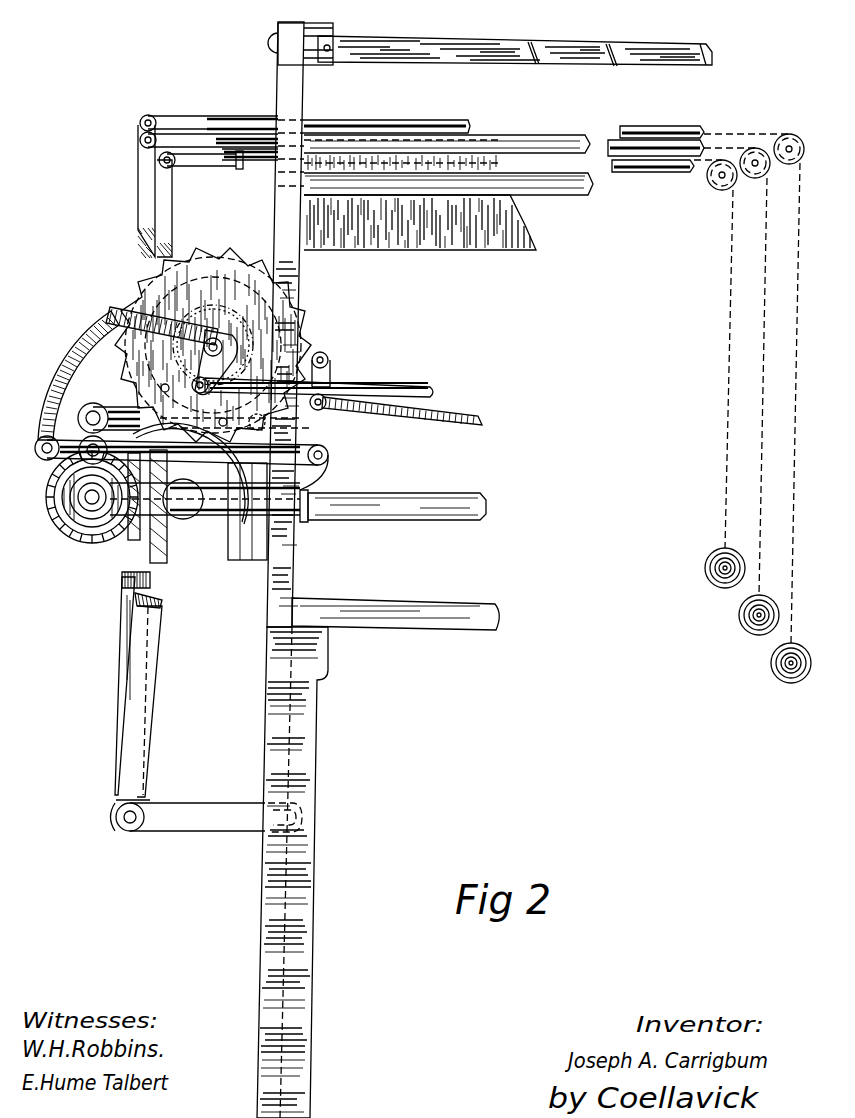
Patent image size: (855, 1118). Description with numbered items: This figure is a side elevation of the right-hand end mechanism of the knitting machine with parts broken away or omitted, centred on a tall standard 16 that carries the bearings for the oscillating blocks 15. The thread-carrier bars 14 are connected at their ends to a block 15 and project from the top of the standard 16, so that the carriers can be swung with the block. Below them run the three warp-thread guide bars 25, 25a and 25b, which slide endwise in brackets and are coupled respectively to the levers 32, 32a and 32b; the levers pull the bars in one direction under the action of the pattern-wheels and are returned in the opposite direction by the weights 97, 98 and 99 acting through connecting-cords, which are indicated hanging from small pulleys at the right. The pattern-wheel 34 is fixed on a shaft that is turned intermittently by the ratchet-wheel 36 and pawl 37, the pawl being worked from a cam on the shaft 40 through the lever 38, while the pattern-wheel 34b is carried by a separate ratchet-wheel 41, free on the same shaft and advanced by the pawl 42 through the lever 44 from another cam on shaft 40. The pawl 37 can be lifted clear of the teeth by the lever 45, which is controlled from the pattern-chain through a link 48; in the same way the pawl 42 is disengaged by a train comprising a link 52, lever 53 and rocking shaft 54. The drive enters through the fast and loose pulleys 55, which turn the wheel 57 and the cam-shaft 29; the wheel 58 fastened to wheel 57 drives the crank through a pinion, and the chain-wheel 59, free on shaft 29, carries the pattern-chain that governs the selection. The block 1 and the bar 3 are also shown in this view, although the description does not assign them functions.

The block 1 is at (420, 222).
The bars 3 is at (448, 165).
The bars 14 is at (515, 51).
The blocks 15 is at (310, 25).
The standards 16 is at (303, 85).
The bar 25 is at (378, 121).
The bar 25a is at (612, 140).
The bar 25b is at (506, 160).
The cam-shaft 29 is at (298, 500).
The lever 32 is at (136, 128).
The lever 32a is at (112, 630).
The lever 32b is at (160, 640).
The pattern-wheel 34 is at (205, 273).
The pattern-wheel 34b is at (212, 332).
The ratchet-wheel 36 is at (232, 240).
The pawl 37 is at (70, 350).
The lever 38 is at (46, 456).
The shaft 40 is at (92, 497).
The ratchet-wheel 41 is at (213, 337).
The pawl 42 is at (197, 393).
The lever 44 is at (108, 405).
The lever 45 is at (110, 310).
The link 48 is at (414, 386).
The link 52 is at (402, 407).
The lever 53 is at (336, 383).
The rocking shaft 54 is at (328, 357).
The fast and loose pulleys 55 is at (190, 505).
The wheel 57 is at (167, 548).
The wheel 58 is at (128, 535).
The chain-wheel 59 is at (80, 533).
The weight 97 is at (712, 568).
The weight 98 is at (745, 615).
The weight 99 is at (777, 663).